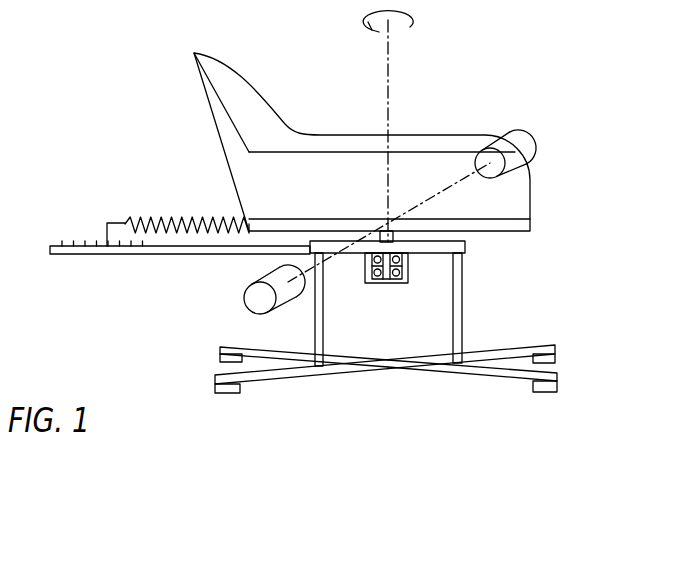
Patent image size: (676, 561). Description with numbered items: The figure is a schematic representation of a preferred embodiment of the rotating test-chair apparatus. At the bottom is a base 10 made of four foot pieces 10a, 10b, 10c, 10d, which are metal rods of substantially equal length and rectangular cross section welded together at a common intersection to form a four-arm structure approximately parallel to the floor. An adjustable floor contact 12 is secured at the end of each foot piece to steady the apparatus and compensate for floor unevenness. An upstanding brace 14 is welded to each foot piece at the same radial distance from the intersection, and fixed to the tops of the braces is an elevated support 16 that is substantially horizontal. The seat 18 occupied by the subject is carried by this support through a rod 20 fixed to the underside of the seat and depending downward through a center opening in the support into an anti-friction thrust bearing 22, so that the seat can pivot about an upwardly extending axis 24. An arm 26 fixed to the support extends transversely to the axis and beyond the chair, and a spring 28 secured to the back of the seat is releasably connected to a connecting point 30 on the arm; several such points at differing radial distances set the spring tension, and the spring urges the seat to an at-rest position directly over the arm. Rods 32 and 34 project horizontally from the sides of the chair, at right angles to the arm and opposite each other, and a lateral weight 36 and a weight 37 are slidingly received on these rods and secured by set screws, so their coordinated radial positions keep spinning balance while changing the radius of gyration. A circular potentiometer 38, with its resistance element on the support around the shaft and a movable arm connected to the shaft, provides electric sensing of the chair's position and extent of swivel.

The base 10 is at (409, 365).
The foot piece 10a is at (285, 386).
The foot piece 10b is at (280, 347).
The foot piece 10c is at (495, 338).
The foot piece 10d is at (510, 384).
The adjustable floor contact 12 is at (558, 362).
The upstanding brace 14 is at (463, 298).
The elevated support 16 is at (466, 246).
The seat 18 is at (520, 207).
The rod 20 is at (392, 236).
The anti-friction thrust bearing 22 is at (407, 282).
The axis 24 is at (390, 100).
The arm 26 is at (156, 255).
The spring 28 is at (157, 217).
The connecting point 30 is at (62, 243).
The rod 32 is at (329, 256).
The rod 34 is at (446, 190).
The lateral weight 36 is at (272, 273).
The weight 37 is at (513, 133).
The circular potentiometer 38 is at (403, 258).